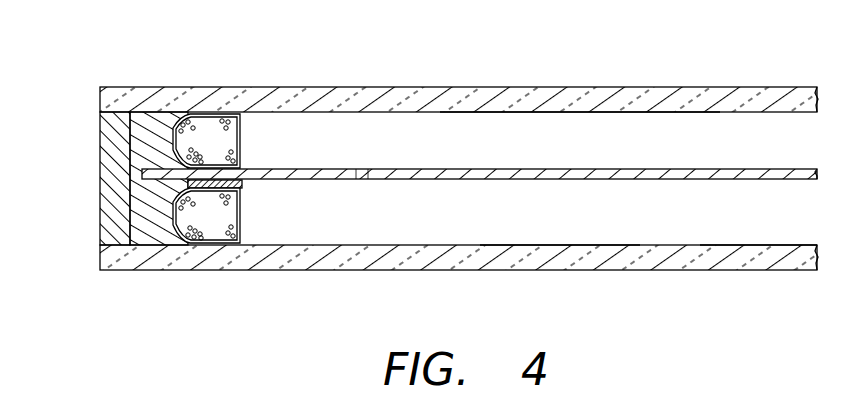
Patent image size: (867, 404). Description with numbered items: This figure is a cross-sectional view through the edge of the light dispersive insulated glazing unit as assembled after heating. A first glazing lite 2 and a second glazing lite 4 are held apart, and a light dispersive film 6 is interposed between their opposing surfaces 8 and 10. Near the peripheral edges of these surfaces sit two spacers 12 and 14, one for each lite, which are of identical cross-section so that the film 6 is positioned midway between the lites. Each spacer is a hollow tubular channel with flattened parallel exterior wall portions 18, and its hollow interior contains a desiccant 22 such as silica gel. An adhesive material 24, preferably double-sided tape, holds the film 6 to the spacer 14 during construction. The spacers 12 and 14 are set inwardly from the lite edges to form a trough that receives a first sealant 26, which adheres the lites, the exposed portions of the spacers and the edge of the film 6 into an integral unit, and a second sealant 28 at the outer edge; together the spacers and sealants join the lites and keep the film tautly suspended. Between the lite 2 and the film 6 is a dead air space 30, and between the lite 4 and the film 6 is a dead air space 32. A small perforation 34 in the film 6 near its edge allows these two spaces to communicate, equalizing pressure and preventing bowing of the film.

The first glazing lite 2 is at (680, 87).
The second glazing lite 4 is at (754, 270).
The light dispersive film 6 is at (708, 169).
The opposing surface of first lite 8 is at (660, 112).
The opposing surface of second lite 10 is at (778, 245).
The first spacer 12 is at (253, 140).
The second spacer 14 is at (232, 246).
The flattened parallel exterior wall portions 18 is at (214, 158).
The desiccant 22 is at (189, 121).
The adhesive material 24 is at (246, 184).
The first sealant 26 is at (156, 112).
The second sealant 28 is at (112, 173).
The dead air space 30 is at (518, 135).
The dead air space 32 is at (566, 225).
The perforation 34 is at (362, 178).